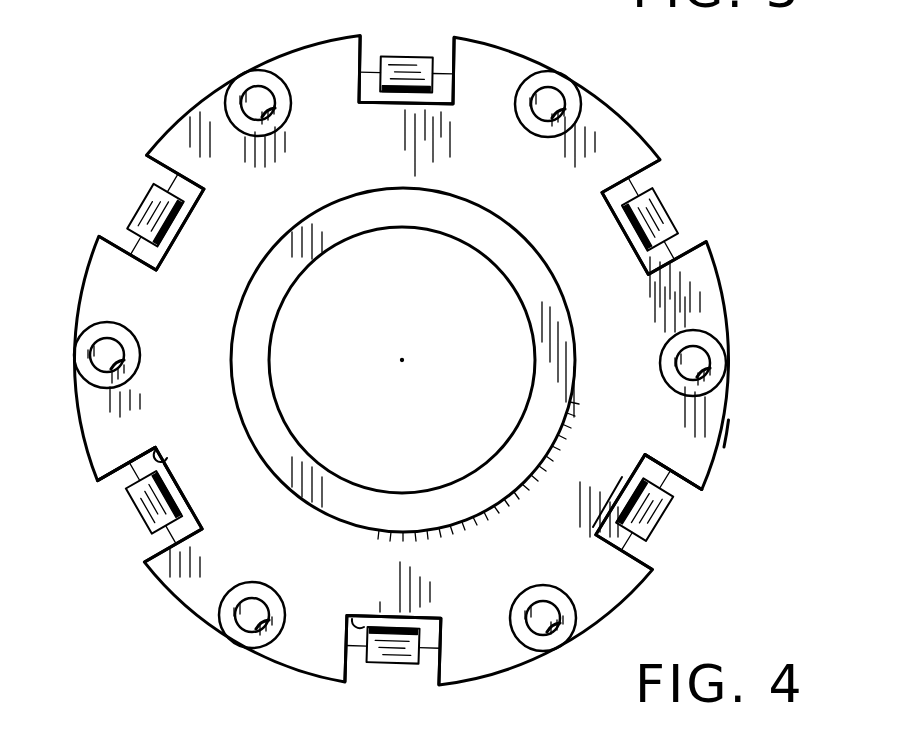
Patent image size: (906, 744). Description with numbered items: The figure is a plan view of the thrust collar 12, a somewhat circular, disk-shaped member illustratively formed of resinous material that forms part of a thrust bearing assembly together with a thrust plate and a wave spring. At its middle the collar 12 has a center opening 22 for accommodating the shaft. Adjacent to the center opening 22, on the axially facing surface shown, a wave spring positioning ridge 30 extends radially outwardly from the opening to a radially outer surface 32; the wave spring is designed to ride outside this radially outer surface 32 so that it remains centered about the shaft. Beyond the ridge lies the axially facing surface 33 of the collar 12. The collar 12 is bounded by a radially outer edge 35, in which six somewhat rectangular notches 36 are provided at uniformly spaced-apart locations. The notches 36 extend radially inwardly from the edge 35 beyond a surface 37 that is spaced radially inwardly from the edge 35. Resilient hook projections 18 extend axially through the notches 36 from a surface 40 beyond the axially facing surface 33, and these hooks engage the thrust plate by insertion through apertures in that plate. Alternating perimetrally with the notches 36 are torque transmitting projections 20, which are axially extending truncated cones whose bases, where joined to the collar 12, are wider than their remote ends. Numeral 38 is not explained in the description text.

The thrust collar 12 is at (610, 101).
The resilient hook projections 18 is at (411, 72).
The torque transmitting projections 20 is at (256, 96).
The center opening 22 is at (348, 270).
The wave spring positioning ridge 30 is at (541, 407).
The radially outer surface 32 is at (577, 405).
The axially facing surface 33 is at (556, 488).
The radially outer edge 35 is at (725, 433).
The notches 36 is at (375, 57).
The surface 37 is at (103, 482).
The rounded corner 38 is at (165, 452).
The surface 40 is at (178, 490).